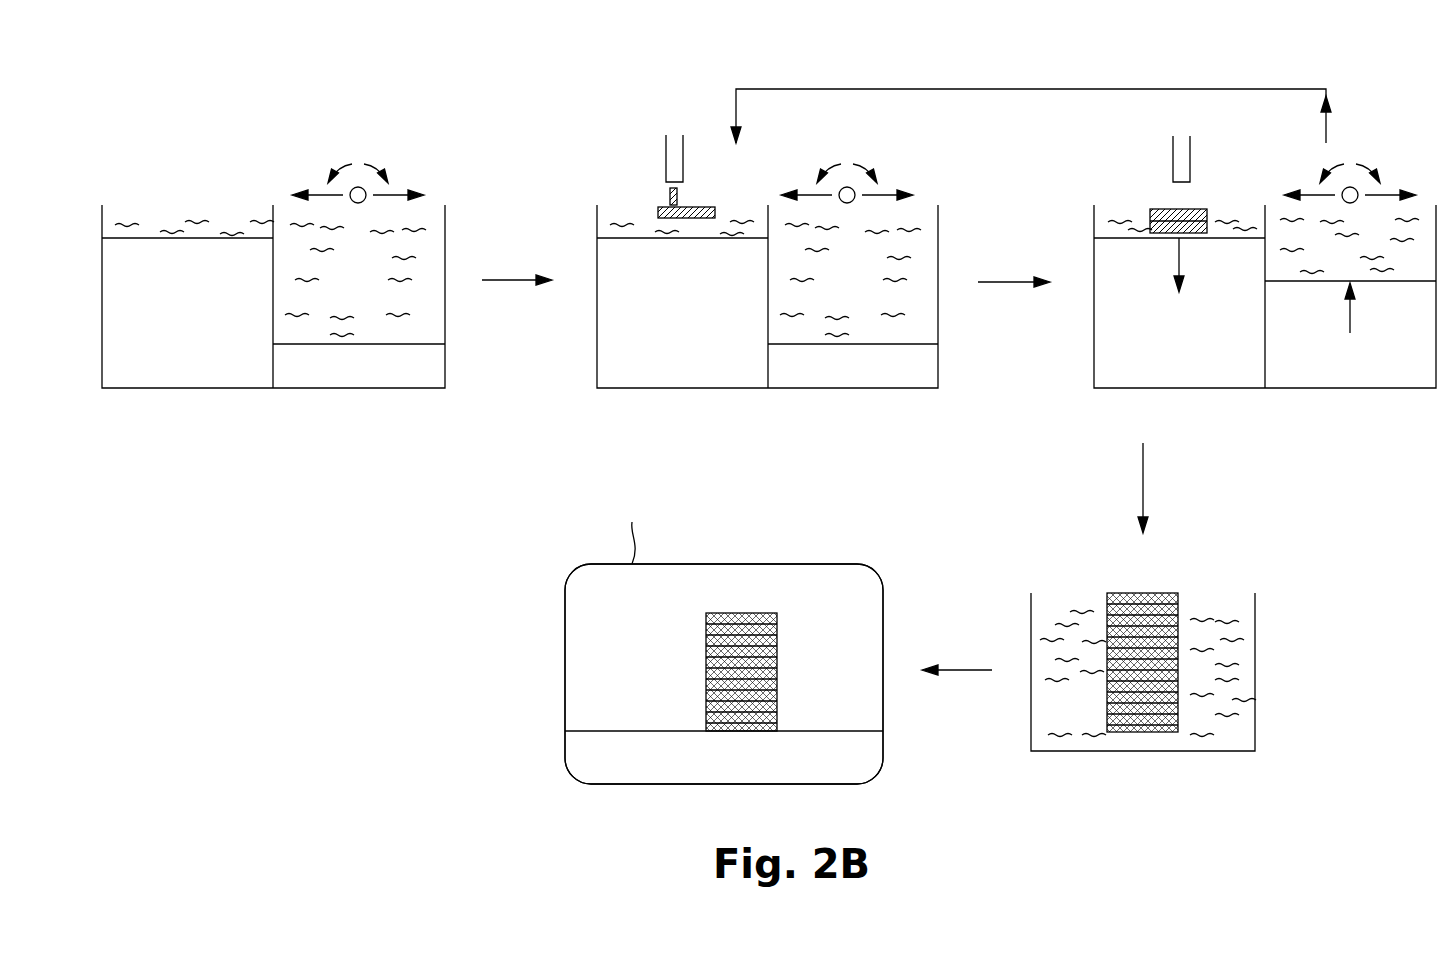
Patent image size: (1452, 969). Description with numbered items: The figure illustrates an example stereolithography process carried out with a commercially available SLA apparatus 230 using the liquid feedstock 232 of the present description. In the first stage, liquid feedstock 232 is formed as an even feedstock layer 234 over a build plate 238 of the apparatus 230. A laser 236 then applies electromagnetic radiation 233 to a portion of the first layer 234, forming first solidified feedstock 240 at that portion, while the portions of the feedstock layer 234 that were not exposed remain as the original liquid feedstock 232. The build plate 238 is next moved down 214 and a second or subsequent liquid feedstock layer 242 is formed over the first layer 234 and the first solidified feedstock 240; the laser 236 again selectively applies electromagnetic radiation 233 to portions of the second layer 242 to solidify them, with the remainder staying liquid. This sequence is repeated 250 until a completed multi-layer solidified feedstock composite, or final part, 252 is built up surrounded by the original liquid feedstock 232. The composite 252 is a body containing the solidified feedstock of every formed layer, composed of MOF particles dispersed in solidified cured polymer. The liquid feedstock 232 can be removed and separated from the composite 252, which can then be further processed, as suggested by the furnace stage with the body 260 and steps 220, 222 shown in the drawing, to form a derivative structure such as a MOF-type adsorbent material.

The SLA apparatus 230 is at (178, 112).
The liquid feedstock 232 is at (854, 485).
The electromagnetic radiation 233 is at (678, 195).
The feedstock layer 234 is at (240, 236).
The laser 236 is at (668, 148).
The build plate 238 is at (168, 240).
The first solidified feedstock 240 is at (656, 206).
The second liquid feedstock layer 242 is at (1110, 222).
The moving down 214 is at (1210, 265).
The repeated sequence 250 is at (1031, 103).
The multi-layer solidified feedstock composite 252 is at (1162, 620).
The sintered body 260 is at (752, 668).
The debinding step 220 is at (724, 661).
The sintering step 222 is at (724, 693).